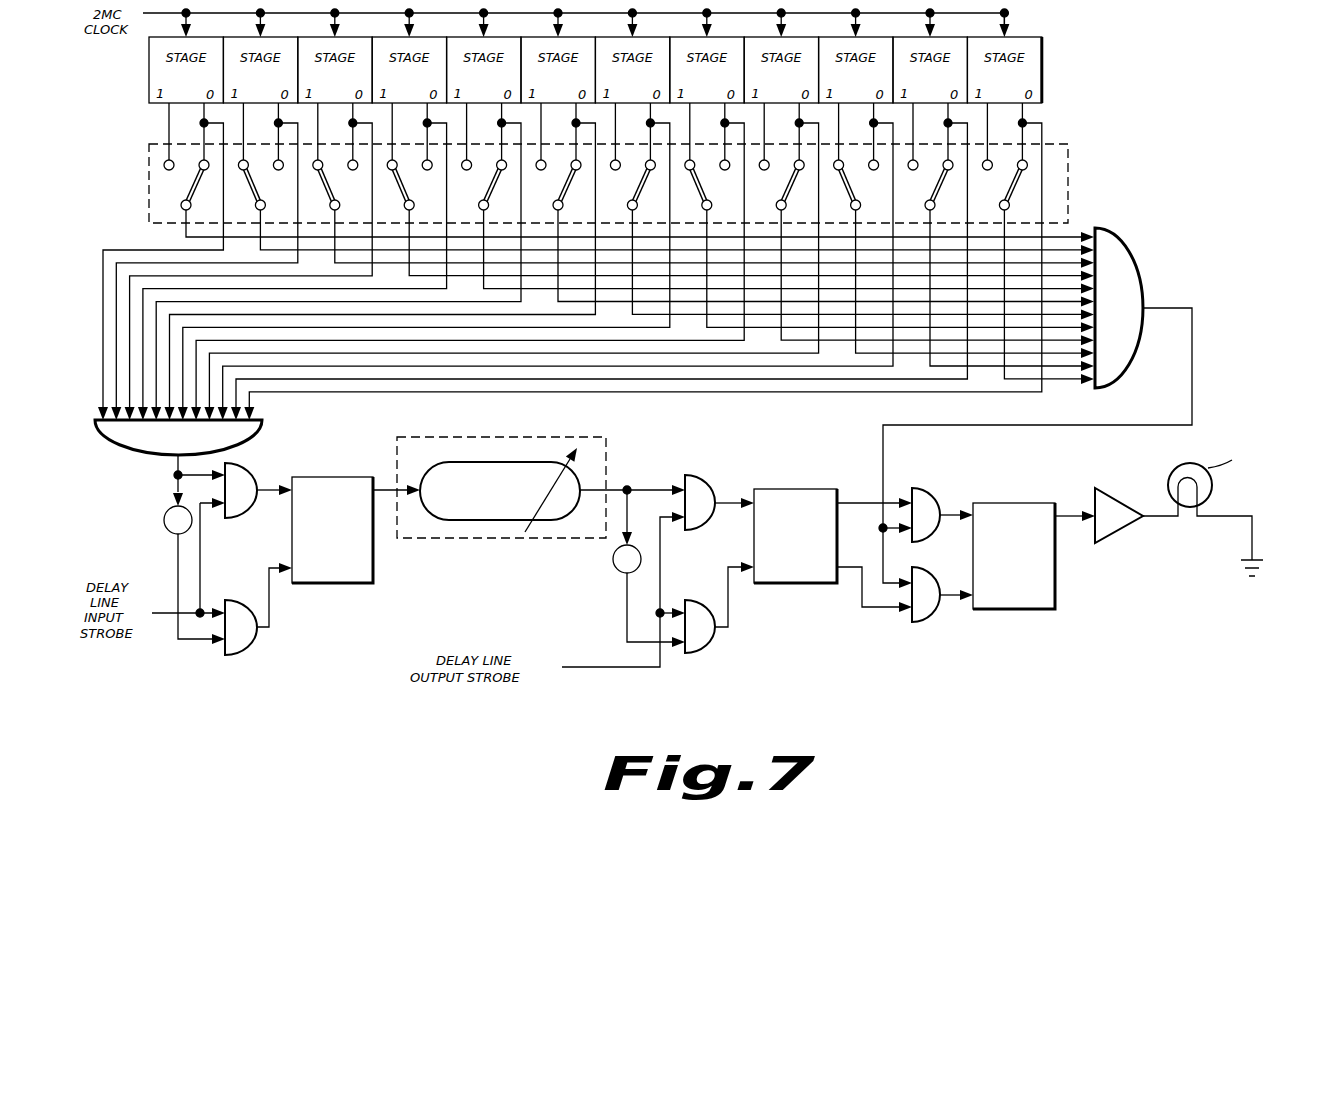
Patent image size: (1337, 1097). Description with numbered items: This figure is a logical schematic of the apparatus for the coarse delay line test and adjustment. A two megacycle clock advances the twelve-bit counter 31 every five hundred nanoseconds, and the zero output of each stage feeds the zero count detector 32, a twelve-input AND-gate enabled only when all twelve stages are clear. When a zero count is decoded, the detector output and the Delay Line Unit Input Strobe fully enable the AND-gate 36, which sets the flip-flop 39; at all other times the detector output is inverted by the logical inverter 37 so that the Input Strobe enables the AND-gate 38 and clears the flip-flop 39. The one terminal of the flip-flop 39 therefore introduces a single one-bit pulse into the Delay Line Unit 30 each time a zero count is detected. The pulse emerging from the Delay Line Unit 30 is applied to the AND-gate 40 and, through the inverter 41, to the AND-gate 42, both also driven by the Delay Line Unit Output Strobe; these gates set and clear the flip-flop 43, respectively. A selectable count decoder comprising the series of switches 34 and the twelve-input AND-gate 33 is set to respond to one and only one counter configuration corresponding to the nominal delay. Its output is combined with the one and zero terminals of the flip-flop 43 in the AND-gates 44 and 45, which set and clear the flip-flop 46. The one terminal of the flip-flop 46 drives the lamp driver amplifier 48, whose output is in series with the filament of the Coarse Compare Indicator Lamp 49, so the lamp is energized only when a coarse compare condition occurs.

The Delay Line Unit 30 is at (563, 440).
The twelve-bit counter 31 is at (149, 92).
The zero count detector 32 is at (145, 452).
The twelve-input AND-gate 33 is at (1140, 277).
The series of switches 34 is at (149, 152).
The AND-gate 36 is at (256, 463).
The logical inverter 37 is at (164, 520).
The AND-gate 38 is at (248, 650).
The flip-flop 39 is at (340, 477).
The AND-gate 40 is at (696, 474).
The inverter 41 is at (613, 562).
The AND-gate 42 is at (700, 648).
The flip-flop 43 is at (800, 489).
The AND-gate 44 is at (932, 490).
The AND-gate 45 is at (920, 622).
The flip-flop 46 is at (1020, 503).
The lamp driver amplifier 48 is at (1103, 545).
The Coarse Compare Indicator Lamp 49 is at (1166, 478).